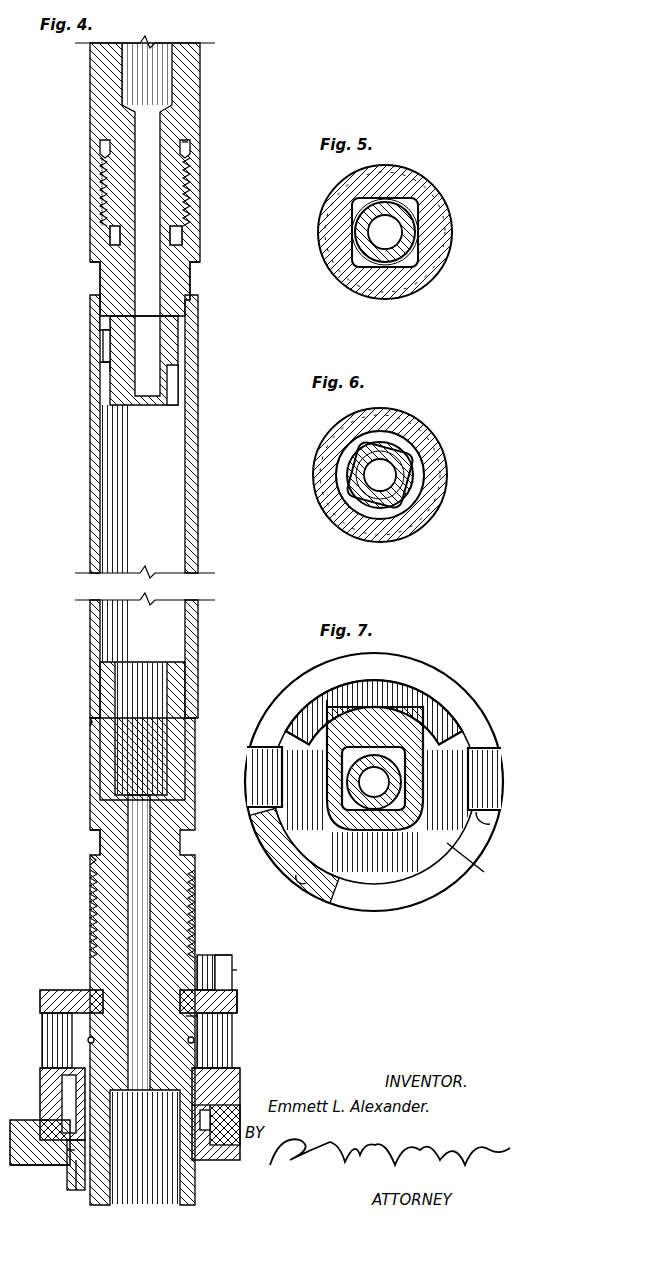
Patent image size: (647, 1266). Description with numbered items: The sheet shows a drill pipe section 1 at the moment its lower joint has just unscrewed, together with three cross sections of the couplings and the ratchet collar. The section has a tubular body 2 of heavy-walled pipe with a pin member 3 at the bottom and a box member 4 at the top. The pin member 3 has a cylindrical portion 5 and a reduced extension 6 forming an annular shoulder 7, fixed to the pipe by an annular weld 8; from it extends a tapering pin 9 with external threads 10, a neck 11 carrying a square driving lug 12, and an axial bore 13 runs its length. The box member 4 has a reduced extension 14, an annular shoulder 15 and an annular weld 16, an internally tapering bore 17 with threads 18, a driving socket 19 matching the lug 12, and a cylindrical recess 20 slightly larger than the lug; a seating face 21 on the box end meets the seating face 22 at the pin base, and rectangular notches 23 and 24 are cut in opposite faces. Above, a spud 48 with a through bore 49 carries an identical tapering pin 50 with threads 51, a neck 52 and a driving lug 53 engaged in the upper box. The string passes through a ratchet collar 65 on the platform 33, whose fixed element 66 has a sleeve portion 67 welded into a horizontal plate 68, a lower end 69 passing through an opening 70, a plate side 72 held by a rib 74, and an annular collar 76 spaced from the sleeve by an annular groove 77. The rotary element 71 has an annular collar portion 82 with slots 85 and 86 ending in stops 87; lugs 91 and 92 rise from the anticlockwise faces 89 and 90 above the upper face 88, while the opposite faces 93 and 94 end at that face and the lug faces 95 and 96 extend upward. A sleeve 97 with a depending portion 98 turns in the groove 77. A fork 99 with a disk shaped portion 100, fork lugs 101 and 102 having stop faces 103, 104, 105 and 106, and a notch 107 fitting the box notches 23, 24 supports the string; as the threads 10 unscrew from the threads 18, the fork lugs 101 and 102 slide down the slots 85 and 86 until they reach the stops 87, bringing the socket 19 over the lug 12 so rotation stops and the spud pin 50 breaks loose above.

In FIG. 4, the drill pipe section 1 is at (206, 538).
In FIG. 4, the tubular body 2 is at (90, 489).
In FIG. 4, the pin member 3 is at (90, 757).
In FIG. 4, the box member 4 is at (201, 210).
In FIG. 5, the box member 4 is at (445, 270).
In FIG. 6, the box member 4 is at (449, 476).
In FIG. 7, the box member 4 is at (412, 700).
In FIG. 4, the cylindrical portion 5 is at (100, 800).
In FIG. 4, the reduced extension 6 is at (100, 681).
In FIG. 4, the annular shoulder 7 is at (90, 722).
In FIG. 4, the annular weld 8 is at (90, 718).
In FIG. 4, the tapering pin 9 is at (100, 841).
In FIG. 4, the external threads 10 is at (96, 860).
In FIG. 4, the neck 11 is at (92, 935).
In FIG. 7, the neck 11 is at (440, 700).
In FIG. 4, the driving lug 12 is at (100, 1040).
In FIG. 7, the driving lug 12 is at (412, 890).
In FIG. 4, the axial bore 13 is at (128, 818).
In FIG. 7, the axial bore 13 is at (405, 778).
In FIG. 4, the reduced extension 14 is at (104, 366).
In FIG. 4, the annular shoulder 15 is at (106, 345).
In FIG. 4, the annular weld 16 is at (100, 330).
In FIG. 4, the internally tapering bore 17 is at (100, 170).
In FIG. 4, the threads 18 is at (104, 185).
In FIG. 4, the driving socket 19 is at (115, 245).
In FIG. 5, the driving socket 19 is at (420, 208).
In FIG. 4, the cylindrical recess 20 is at (112, 320).
In FIG. 6, the cylindrical recess 20 is at (410, 458).
In FIG. 4, the annular seating face 21 is at (190, 148).
In FIG. 4, the seating face 22 is at (186, 140).
In FIG. 4, the rectangular notch 23 is at (100, 272).
In FIG. 7, the rectangular notch 23 is at (350, 798).
In FIG. 7, the rectangular notch 24 is at (428, 782).
In FIG. 4, the platform 33 is at (16, 1170).
In FIG. 4, the spud 48 is at (90, 81).
In FIG. 4, the through bore 49 is at (170, 76).
In FIG. 5, the through bore 49 is at (400, 232).
In FIG. 6, the through bore 49 is at (350, 462).
In FIG. 4, the tapering pin 50 is at (186, 182).
In FIG. 4, the external threads 51 is at (100, 152).
In FIG. 4, the neck 52 is at (176, 262).
In FIG. 5, the neck 52 is at (354, 232).
In FIG. 6, the neck 52 is at (350, 482).
In FIG. 4, the driving lug 53 is at (175, 380).
In FIG. 5, the driving lug 53 is at (338, 190).
In FIG. 6, the driving lug 53 is at (350, 525).
In FIG. 4, the ratchet collar 65 is at (34, 1071).
In FIG. 4, the fixed element 66 is at (36, 1134).
In FIG. 4, the sleeve portion 67 is at (76, 1082).
In FIG. 7, the sleeve portion 67 is at (390, 700).
In FIG. 4, the horizontal plate 68 is at (60, 1165).
In FIG. 4, the lower end 69 is at (78, 1185).
In FIG. 4, the opening 70 is at (72, 1165).
In FIG. 4, the rotary element 71 is at (42, 1099).
In FIG. 7, the rotary element 71 is at (366, 911).
In FIG. 4, the side of plate 72 is at (14, 1140).
In FIG. 4, the rib 74 is at (14, 1157).
In FIG. 4, the annular collar 76 is at (236, 1110).
In FIG. 4, the annular groove 77 is at (230, 1122).
In FIG. 4, the annular collar portion 82 is at (240, 1078).
In FIG. 7, the annular collar portion 82 is at (390, 912).
In FIG. 4, the slot 85 is at (42, 1023).
In FIG. 7, the slot 85 is at (250, 796).
In FIG. 4, the slot 86 is at (232, 1023).
In FIG. 7, the slot 86 is at (480, 730).
In FIG. 4, the stop 87 is at (220, 1068).
In FIG. 4, the upper face 88 is at (47, 983).
In FIG. 7, the upper face 88 is at (330, 688).
In FIG. 7, the anticlockwise face of slot 89 is at (250, 778).
In FIG. 4, the anticlockwise face of slot 90 is at (232, 968).
In FIG. 7, the lug 91 is at (296, 845).
In FIG. 4, the lug 92 is at (225, 958).
In FIG. 7, the lug 92 is at (468, 712).
In FIG. 7, the opposite face of slot 93 is at (282, 735).
In FIG. 7, the opposite face of slot 94 is at (490, 800).
In FIG. 7, the face of lug 95 is at (300, 884).
In FIG. 4, the face of lug 96 is at (200, 960).
In FIG. 7, the face of lug 96 is at (452, 706).
In FIG. 4, the sleeve 97 is at (236, 1095).
In FIG. 7, the sleeve 97 is at (327, 700).
In FIG. 4, the depending portion 98 is at (176, 1124).
In FIG. 4, the fork 99 is at (256, 973).
In FIG. 7, the fork 99 is at (478, 860).
In FIG. 7, the disk shaped portion 100 is at (300, 878).
In FIG. 4, the fork lug 101 is at (44, 1000).
In FIG. 7, the fork lug 101 is at (250, 752).
In FIG. 4, the fork lug 102 is at (240, 1001).
In FIG. 7, the fork lug 102 is at (500, 760).
In FIG. 7, the stop face 103 is at (282, 745).
In FIG. 7, the stop face 104 is at (272, 846).
In FIG. 7, the stop face 105 is at (488, 744).
In FIG. 7, the stop face 106 is at (490, 824).
In FIG. 7, the notch 107 is at (316, 700).